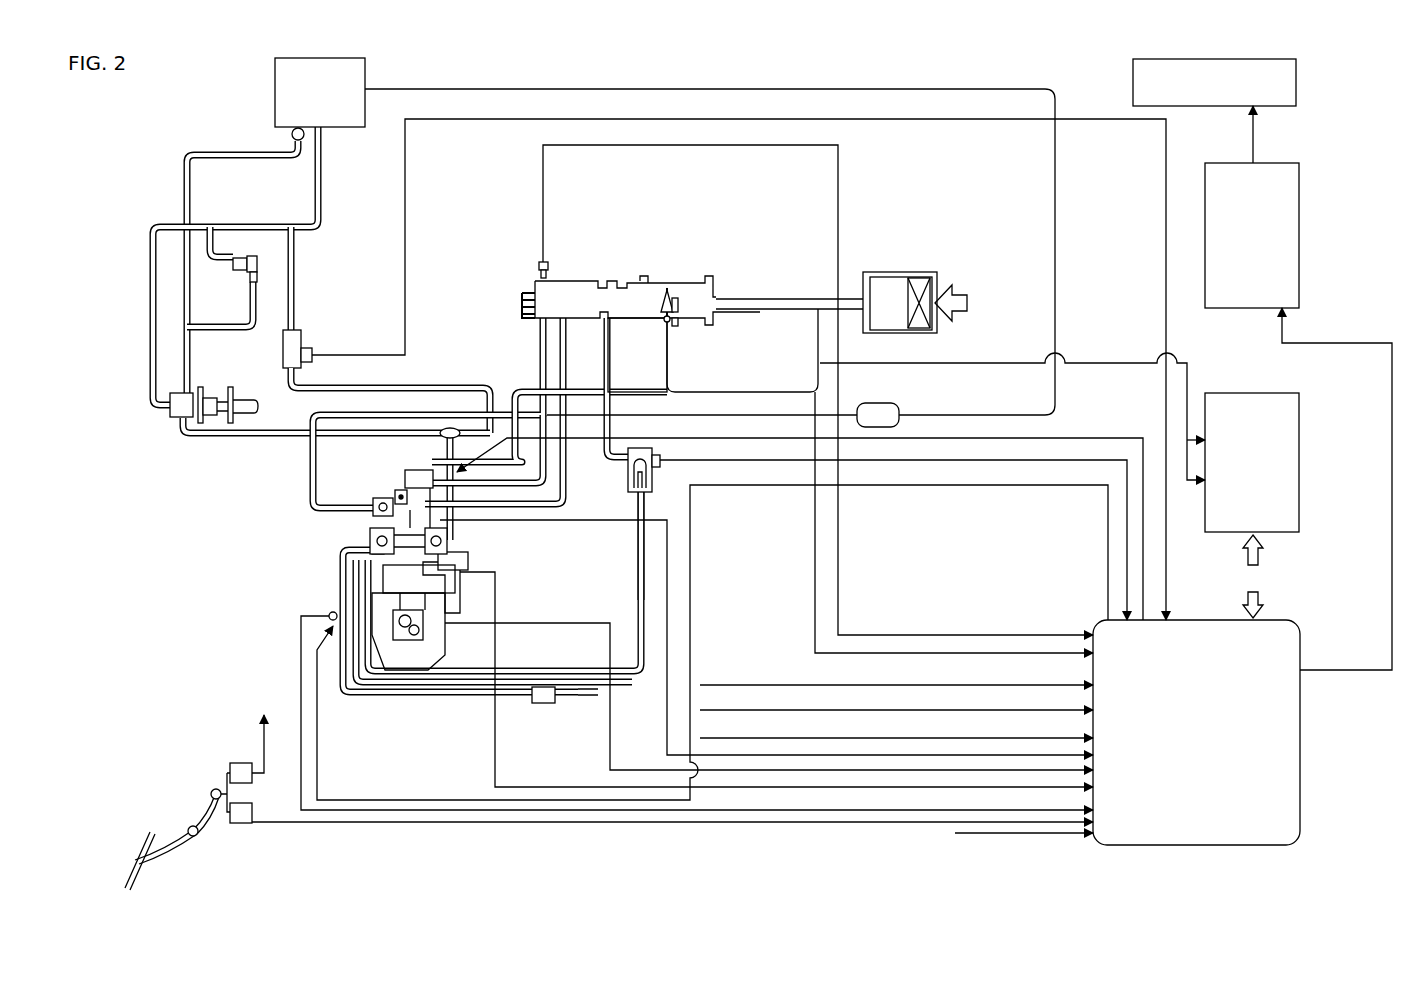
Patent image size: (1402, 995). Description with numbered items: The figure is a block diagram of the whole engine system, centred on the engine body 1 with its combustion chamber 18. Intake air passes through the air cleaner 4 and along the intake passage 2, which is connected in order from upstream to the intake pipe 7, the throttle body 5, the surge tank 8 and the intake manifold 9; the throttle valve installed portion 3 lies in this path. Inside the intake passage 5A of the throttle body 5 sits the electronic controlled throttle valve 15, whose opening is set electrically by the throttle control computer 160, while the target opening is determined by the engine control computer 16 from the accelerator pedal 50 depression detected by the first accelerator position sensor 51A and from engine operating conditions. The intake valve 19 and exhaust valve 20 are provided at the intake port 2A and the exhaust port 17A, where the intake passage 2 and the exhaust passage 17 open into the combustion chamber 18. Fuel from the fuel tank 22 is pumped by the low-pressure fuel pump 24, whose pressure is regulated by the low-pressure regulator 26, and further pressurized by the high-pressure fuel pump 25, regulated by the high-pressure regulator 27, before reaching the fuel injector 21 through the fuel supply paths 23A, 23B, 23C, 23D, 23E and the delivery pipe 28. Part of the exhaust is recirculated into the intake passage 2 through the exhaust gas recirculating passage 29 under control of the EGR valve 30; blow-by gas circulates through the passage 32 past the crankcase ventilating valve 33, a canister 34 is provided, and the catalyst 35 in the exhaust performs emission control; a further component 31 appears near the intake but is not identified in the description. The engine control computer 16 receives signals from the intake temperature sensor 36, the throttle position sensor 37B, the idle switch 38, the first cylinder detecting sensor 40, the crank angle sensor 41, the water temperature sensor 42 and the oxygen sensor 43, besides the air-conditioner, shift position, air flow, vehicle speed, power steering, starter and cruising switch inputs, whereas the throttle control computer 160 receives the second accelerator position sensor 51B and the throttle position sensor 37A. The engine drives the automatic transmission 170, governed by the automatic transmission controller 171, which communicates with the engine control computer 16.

The engine body 1 is at (440, 662).
The intake passage 2 is at (810, 298).
The intake port 2A is at (405, 498).
The throttle valve installed portion 3 is at (700, 325).
The air cleaner 4 is at (893, 277).
The throttle body 5 is at (675, 276).
The intake passage of the throttle body 5A is at (628, 330).
The intake pipe 7 is at (802, 328).
The surge tank 8 is at (530, 318).
The intake manifold 9 is at (568, 486).
The electronic controlled throttle valve 15 is at (663, 314).
The engine control computer 16 is at (1300, 703).
The exhaust passage 17 is at (340, 572).
The exhaust port 17A is at (372, 546).
The combustion chamber 18 is at (365, 630).
The intake valve 19 is at (447, 540).
The exhaust valve 20 is at (370, 532).
The fuel injector 21 is at (465, 560).
The fuel tank 22 is at (275, 86).
The fuel supply path 23A is at (180, 178).
The fuel supply path 23B is at (200, 438).
The fuel supply path 23C is at (440, 388).
The fuel supply path 23D is at (150, 256).
The fuel supply path 23E is at (222, 328).
The low-pressure fuel pump 24 is at (290, 136).
The high-pressure fuel pump 25 is at (178, 418).
The low-pressure regulator 26 is at (258, 272).
The high-pressure regulator 27 is at (305, 335).
The delivery pipe 28 is at (440, 436).
The exhaust gas recirculating passage 29 is at (636, 585).
The EGR valve 30 is at (660, 466).
The pressure sensor 31 is at (640, 395).
The blow-by gas passage 32 is at (310, 462).
The crankcase ventilation valve 33 is at (375, 505).
The canister 34 is at (890, 403).
The catalyst 35 is at (544, 704).
The intake temperature sensor 36 is at (538, 264).
The throttle position sensor 37A is at (677, 314).
The throttle position sensor 37B is at (678, 326).
The idle switch 38 is at (670, 323).
The first cylinder detecting sensor 40 is at (396, 492).
The crank angle sensor 41 is at (430, 628).
The water temperature sensor 42 is at (462, 588).
The oxygen sensor 43 is at (328, 614).
The accelerator pedal 50 is at (178, 852).
The first accelerator position sensor 51A is at (244, 824).
The second accelerator position sensor 51B is at (232, 762).
The throttle control computer 160 is at (1258, 392).
The automatic transmission 170 is at (1203, 106).
The automatic transmission controller 171 is at (1212, 309).